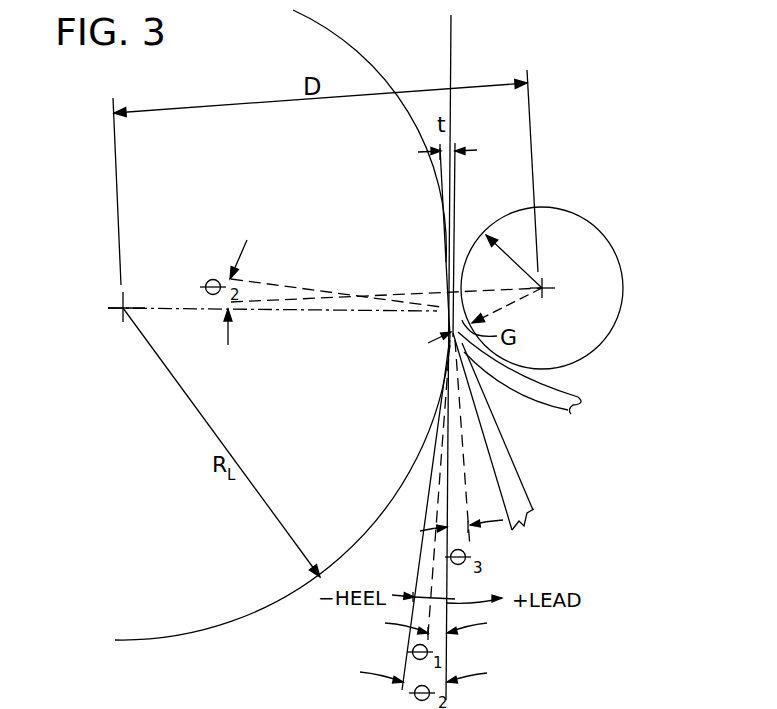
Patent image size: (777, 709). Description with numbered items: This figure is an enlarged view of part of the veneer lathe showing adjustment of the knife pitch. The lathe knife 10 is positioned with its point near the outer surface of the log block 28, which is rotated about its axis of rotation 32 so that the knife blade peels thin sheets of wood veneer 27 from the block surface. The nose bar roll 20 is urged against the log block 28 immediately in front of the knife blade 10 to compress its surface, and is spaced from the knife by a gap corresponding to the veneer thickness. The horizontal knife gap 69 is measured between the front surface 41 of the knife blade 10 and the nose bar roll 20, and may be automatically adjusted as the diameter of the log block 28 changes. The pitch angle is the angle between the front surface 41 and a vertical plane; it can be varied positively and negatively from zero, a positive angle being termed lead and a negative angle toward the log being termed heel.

The lathe knife 10 is at (497, 422).
The nose bar roll 20 is at (592, 227).
The wood veneer 27 is at (553, 389).
The log block 28 is at (313, 21).
The axis of rotation 32 is at (123, 312).
The front surface of the knife blade 41 is at (450, 362).
The horizontal knife gap 69 is at (457, 140).